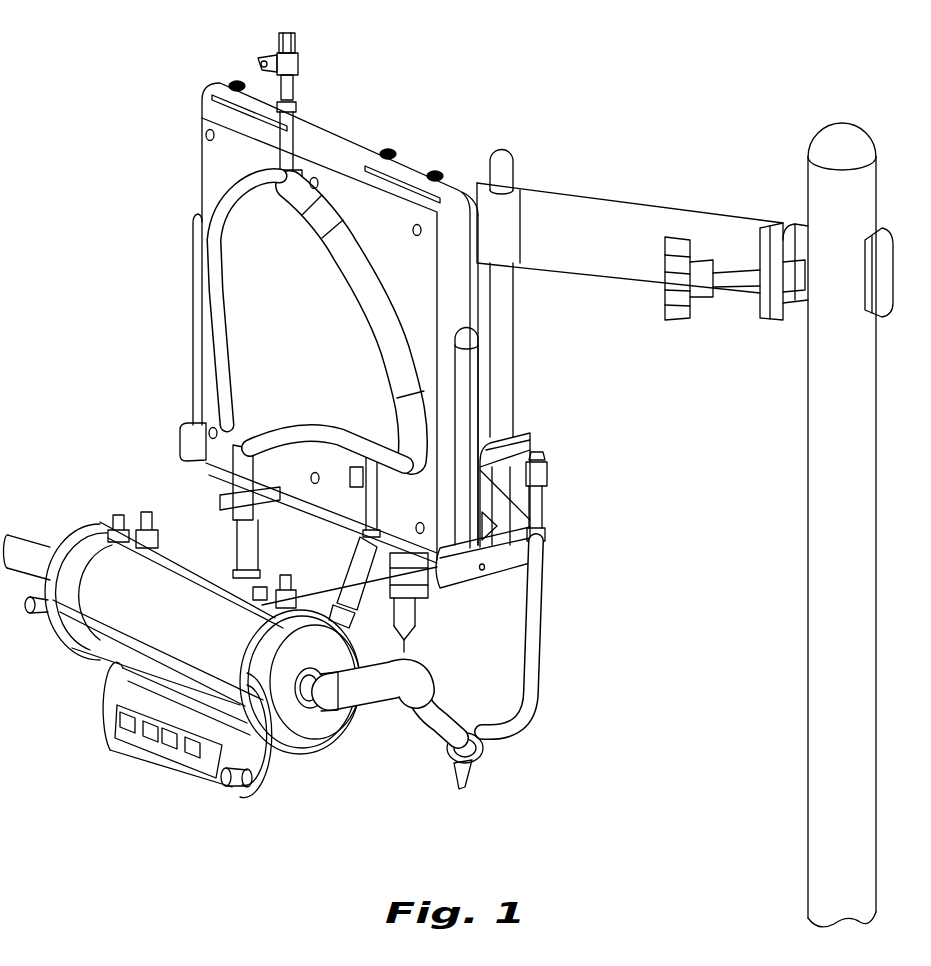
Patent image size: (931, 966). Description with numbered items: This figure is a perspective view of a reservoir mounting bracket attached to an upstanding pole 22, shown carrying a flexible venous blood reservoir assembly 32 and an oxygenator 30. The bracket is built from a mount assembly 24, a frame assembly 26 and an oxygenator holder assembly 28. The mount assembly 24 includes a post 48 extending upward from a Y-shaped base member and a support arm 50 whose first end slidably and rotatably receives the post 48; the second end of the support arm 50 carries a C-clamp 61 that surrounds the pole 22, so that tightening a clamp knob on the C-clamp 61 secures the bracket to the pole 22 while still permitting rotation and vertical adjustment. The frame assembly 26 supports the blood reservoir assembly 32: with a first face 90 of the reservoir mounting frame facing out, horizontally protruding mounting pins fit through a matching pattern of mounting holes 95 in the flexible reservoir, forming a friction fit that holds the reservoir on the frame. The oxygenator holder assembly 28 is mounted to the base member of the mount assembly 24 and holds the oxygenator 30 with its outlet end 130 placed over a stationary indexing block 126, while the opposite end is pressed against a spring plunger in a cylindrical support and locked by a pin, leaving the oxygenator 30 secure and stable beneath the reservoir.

The upstanding pole 22 is at (810, 570).
The mount assembly 24 is at (530, 432).
The frame assembly 26 is at (307, 342).
The oxygenator holder assembly 28 is at (389, 704).
The oxygenator 30 is at (58, 633).
The blood reservoir assembly 32 is at (228, 284).
The post 48 is at (508, 338).
The support arm 50 is at (642, 263).
The C-clamp 61 is at (781, 312).
The first face 90 is at (205, 102).
The mounting holes 95 is at (204, 132).
The indexing block 126 is at (303, 705).
The outlet end 130 is at (340, 718).